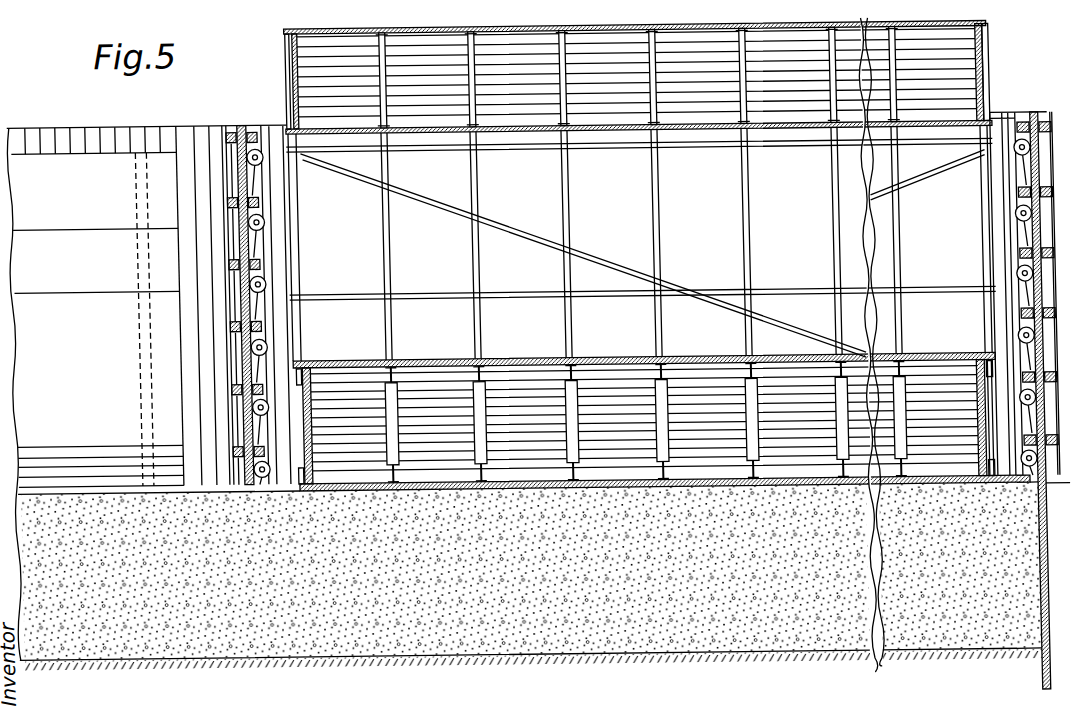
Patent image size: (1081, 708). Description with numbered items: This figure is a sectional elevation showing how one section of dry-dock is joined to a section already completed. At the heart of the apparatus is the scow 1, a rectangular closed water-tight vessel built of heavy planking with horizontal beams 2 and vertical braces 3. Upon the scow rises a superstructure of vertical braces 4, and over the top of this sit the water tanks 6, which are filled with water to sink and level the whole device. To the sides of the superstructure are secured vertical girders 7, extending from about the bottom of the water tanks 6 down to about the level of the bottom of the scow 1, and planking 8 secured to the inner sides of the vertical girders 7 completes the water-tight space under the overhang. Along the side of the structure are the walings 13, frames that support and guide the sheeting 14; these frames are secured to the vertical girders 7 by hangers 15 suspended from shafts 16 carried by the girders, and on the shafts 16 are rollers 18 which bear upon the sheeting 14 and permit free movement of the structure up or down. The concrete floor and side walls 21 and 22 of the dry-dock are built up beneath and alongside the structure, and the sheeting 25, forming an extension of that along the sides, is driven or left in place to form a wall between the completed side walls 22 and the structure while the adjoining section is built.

The scow 1 is at (644, 418).
The horizontal beams 2 is at (484, 478).
The vertical braces 3 is at (485, 414).
The vertical braces 4 is at (387, 263).
The water tanks 6 is at (638, 77).
The vertical girders 7 is at (279, 144).
The planking 8 is at (976, 370).
The walings 13 is at (1041, 299).
The sheeting 14 is at (1038, 466).
The hangers 15 is at (1044, 364).
The shafts 16 is at (1036, 388).
The rollers 18 is at (1043, 346).
The side wall 21 is at (591, 654).
The side wall 22 is at (97, 306).
The sheeting 25 is at (184, 126).